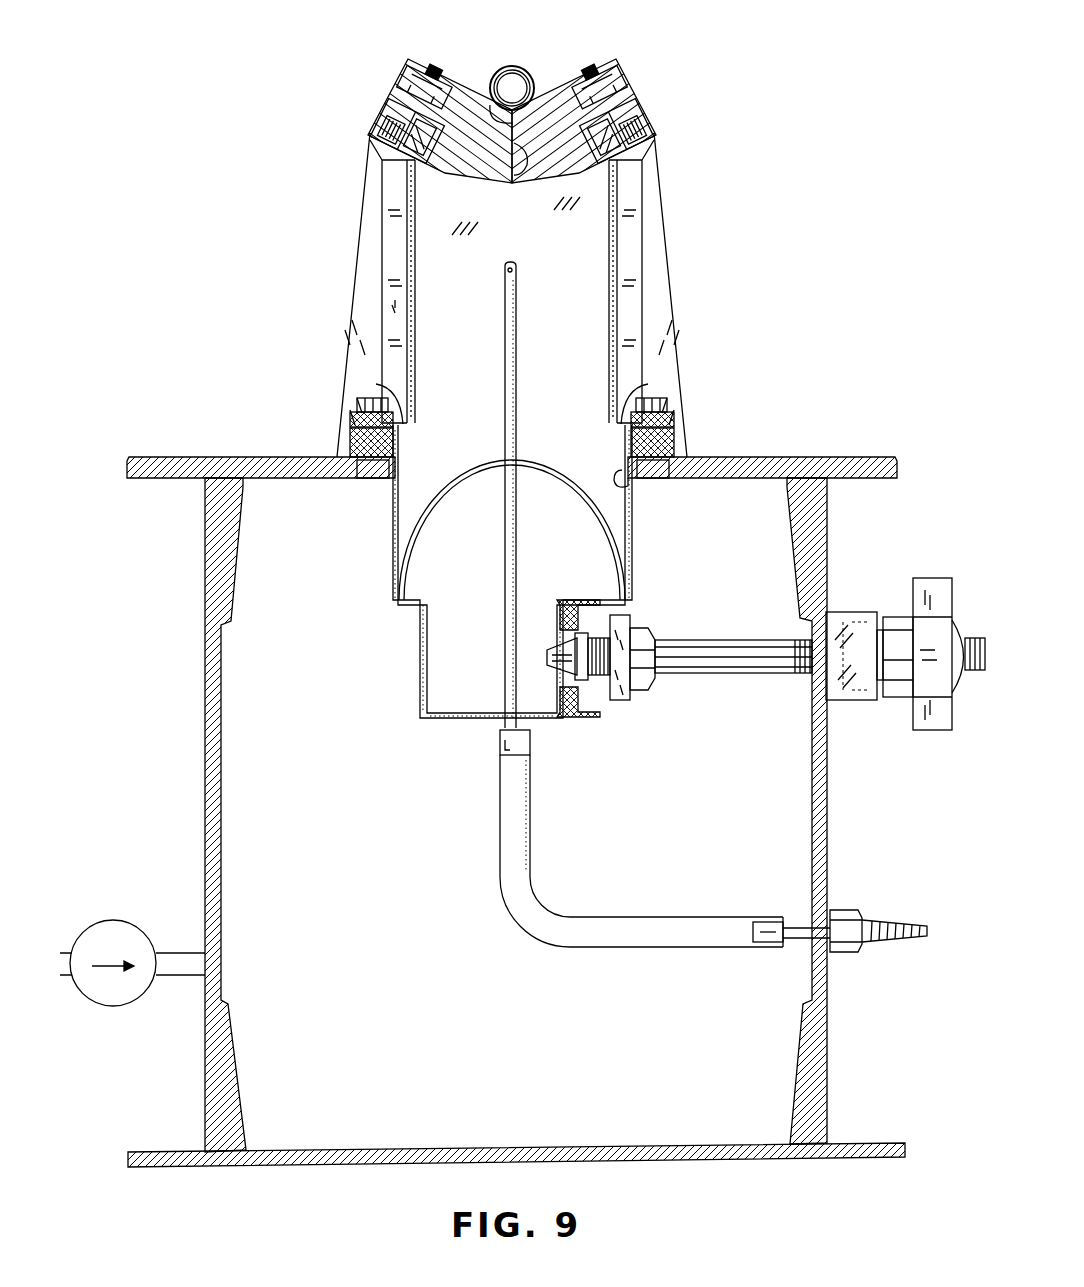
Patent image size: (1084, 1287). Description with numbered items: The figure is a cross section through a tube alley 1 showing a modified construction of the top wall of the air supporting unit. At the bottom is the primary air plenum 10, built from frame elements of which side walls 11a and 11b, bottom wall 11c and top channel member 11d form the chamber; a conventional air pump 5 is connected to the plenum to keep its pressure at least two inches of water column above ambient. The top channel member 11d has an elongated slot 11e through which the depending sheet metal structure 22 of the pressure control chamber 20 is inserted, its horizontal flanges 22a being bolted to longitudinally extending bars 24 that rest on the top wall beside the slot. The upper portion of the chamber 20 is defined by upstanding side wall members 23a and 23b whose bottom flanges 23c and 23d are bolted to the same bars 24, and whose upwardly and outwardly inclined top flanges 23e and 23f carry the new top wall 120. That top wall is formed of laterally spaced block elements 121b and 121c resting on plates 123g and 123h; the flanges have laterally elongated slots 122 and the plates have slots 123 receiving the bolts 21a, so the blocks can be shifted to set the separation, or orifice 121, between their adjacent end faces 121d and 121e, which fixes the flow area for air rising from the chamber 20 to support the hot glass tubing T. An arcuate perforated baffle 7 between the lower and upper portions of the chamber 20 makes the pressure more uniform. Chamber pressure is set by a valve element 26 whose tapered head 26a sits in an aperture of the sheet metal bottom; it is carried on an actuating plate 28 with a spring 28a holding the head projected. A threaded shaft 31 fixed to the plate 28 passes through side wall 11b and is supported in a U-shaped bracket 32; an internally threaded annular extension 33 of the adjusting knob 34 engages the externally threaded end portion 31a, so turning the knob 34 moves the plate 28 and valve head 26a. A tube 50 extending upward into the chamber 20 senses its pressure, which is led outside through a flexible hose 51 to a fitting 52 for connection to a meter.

The tube alley 1 is at (197, 748).
The air pump 5 is at (108, 1006).
The arcuate-shaped perforated baffle 7 is at (440, 505).
The primary air plenum 10 is at (336, 805).
The side wall frame element 11a is at (223, 890).
The side wall frame element 11b is at (812, 862).
The bottom wall frame element 11c is at (432, 1144).
The top wall channel member 11d is at (760, 457).
The elongated slot 11e is at (620, 480).
The pressure control chamber 20 is at (547, 386).
The bolts 21a is at (368, 158).
The depending sheet metal structure 22 is at (390, 530).
The horizontal flanges 22a is at (357, 483).
The upstanding side wall member 23a is at (413, 252).
The upstanding side wall member 23b is at (657, 248).
The horizontal flange 23c is at (410, 435).
The horizontal flange 23d is at (633, 387).
The inclined flange 23e is at (368, 140).
The inclined flange 23f is at (650, 143).
The longitudinally extending bars 24 is at (350, 440).
The adjustable valve element 26 is at (580, 600).
The tapered valve head 26a is at (567, 673).
The actuating plate 28 is at (625, 622).
The spring 28a is at (587, 678).
The threaded shaft 31 is at (745, 670).
The externally threaded end portion 31a is at (975, 675).
The shaft support bracket 32 is at (847, 612).
The annular extension 33 is at (850, 700).
The adjusting knob 34 is at (928, 732).
The tube 50 is at (522, 313).
The flexible hose 51 is at (577, 915).
The fitting 52 is at (852, 953).
The top wall 120 is at (553, 83).
The orifice 121 is at (517, 167).
The block element 121b is at (460, 82).
The block element 121c is at (637, 90).
The end face 121d is at (520, 187).
The end face 121e is at (520, 67).
The laterally elongated slots 122 is at (402, 182).
The slots 123 is at (413, 100).
The plate 123g is at (378, 120).
The plate 123h is at (650, 130).
The hot glass tubing T is at (497, 65).